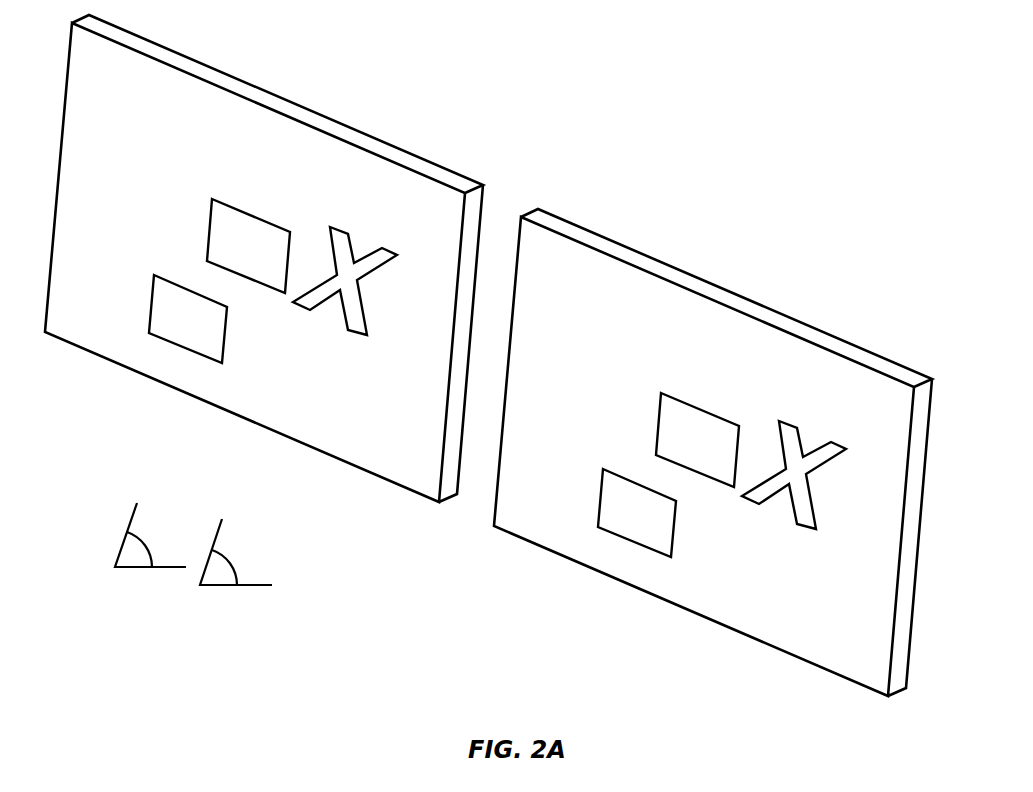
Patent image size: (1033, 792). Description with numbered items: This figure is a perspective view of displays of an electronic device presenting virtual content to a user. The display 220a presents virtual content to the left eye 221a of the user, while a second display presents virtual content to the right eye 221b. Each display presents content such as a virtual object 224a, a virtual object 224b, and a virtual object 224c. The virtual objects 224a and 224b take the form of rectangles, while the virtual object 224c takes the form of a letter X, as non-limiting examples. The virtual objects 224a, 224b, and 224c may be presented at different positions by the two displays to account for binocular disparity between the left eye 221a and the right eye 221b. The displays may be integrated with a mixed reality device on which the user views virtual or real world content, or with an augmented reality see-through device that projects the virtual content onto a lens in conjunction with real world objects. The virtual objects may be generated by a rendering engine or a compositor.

The display 220a is at (478, 183).
The virtual object 224a is at (240, 212).
The virtual object 224b is at (148, 331).
The virtual object 224c is at (338, 226).
The left eye 221a is at (128, 568).
The right eye 221b is at (220, 587).